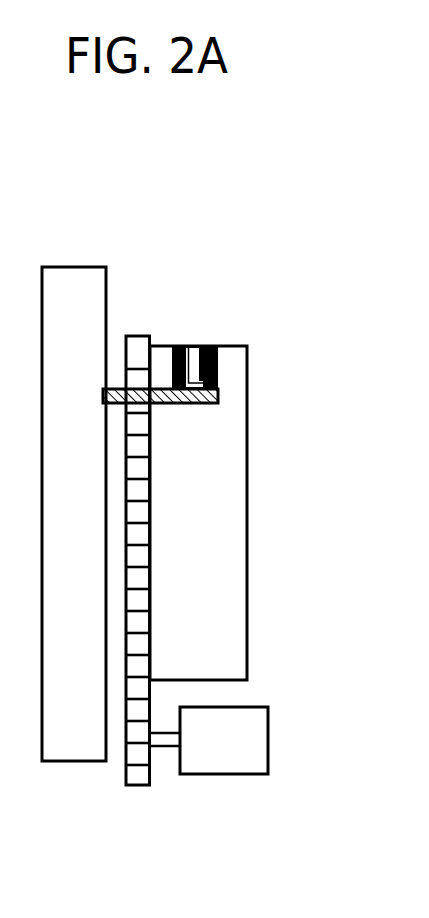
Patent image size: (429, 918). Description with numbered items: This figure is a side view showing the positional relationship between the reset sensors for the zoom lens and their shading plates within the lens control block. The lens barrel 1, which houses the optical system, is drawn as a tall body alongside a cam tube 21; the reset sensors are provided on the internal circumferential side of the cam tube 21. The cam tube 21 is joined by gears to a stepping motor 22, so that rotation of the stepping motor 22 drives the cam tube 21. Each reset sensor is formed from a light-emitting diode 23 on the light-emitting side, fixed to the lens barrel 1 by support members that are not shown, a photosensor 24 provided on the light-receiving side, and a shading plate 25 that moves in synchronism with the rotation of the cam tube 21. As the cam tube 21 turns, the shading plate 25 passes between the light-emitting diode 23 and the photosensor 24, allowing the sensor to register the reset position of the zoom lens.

The lens barrel 1 is at (57, 763).
The cam tube 21 is at (247, 632).
The stepping motor 22 is at (238, 777).
The light-emitting diode 23 is at (173, 346).
The photosensor 24 is at (212, 346).
The shading plate 25 is at (190, 347).